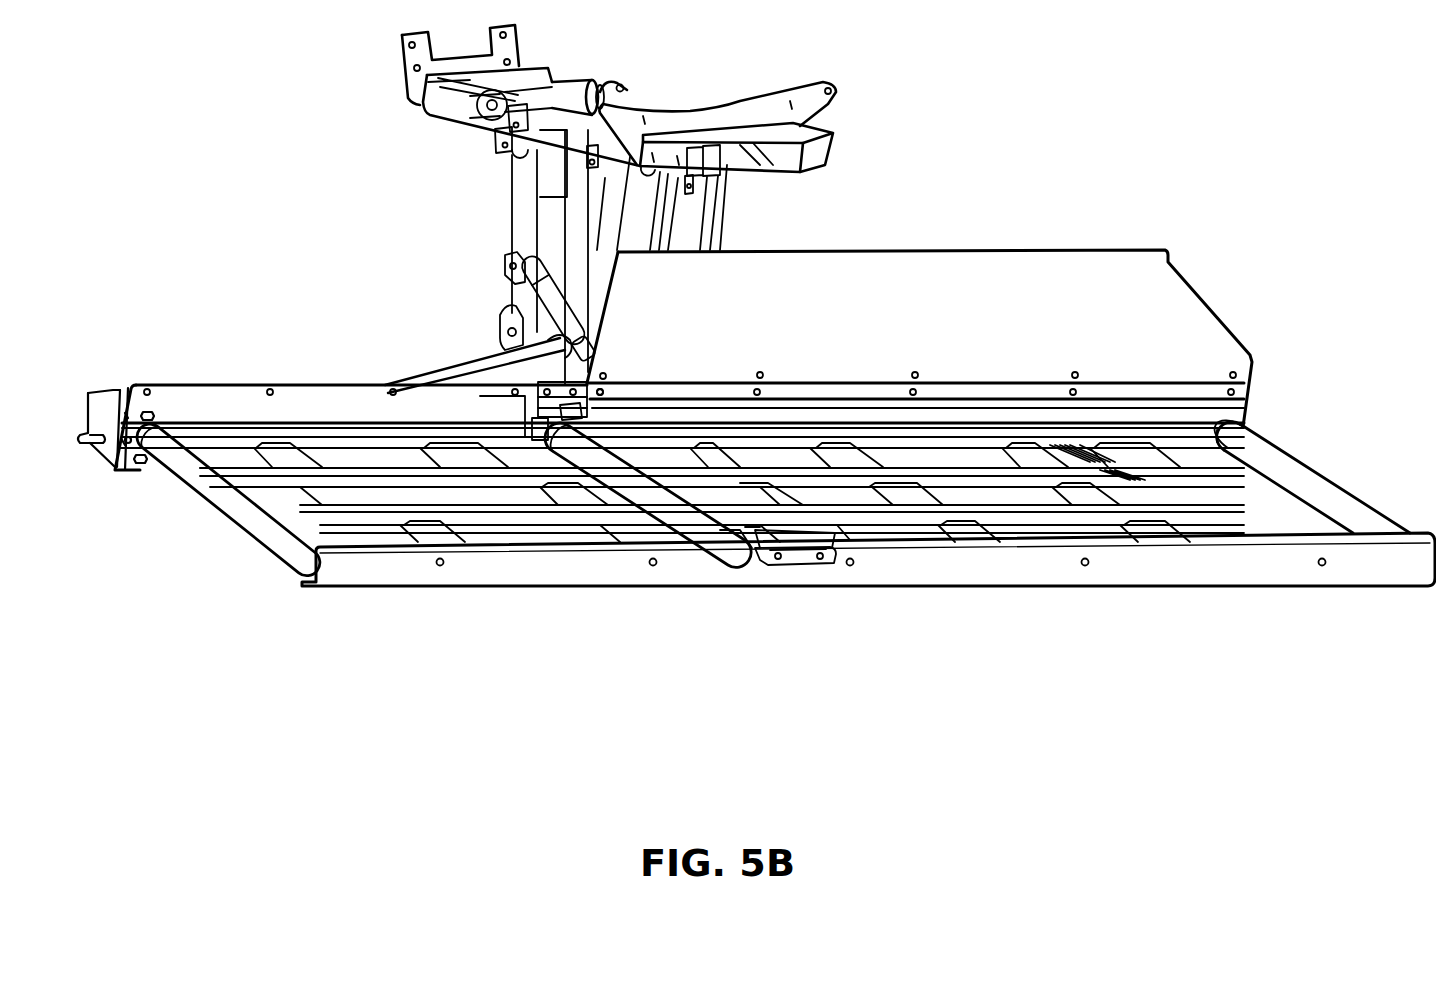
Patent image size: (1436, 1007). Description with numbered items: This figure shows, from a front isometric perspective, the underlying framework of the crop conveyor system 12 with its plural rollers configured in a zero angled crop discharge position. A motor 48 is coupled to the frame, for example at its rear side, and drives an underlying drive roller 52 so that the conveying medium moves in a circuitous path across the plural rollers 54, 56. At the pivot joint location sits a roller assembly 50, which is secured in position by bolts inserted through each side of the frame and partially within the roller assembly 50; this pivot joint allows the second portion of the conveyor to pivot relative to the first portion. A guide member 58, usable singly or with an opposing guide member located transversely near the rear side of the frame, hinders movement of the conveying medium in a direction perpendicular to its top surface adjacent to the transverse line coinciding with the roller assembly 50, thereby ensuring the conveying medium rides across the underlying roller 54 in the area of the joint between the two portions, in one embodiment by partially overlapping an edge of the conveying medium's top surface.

The crop conveyor system 12 is at (215, 600).
The motor 48 is at (103, 410).
The roller assembly 50 is at (590, 413).
The drive roller 52 is at (187, 473).
The roller 54 is at (713, 513).
The roller 56 is at (1277, 463).
The guide member 58 is at (833, 552).